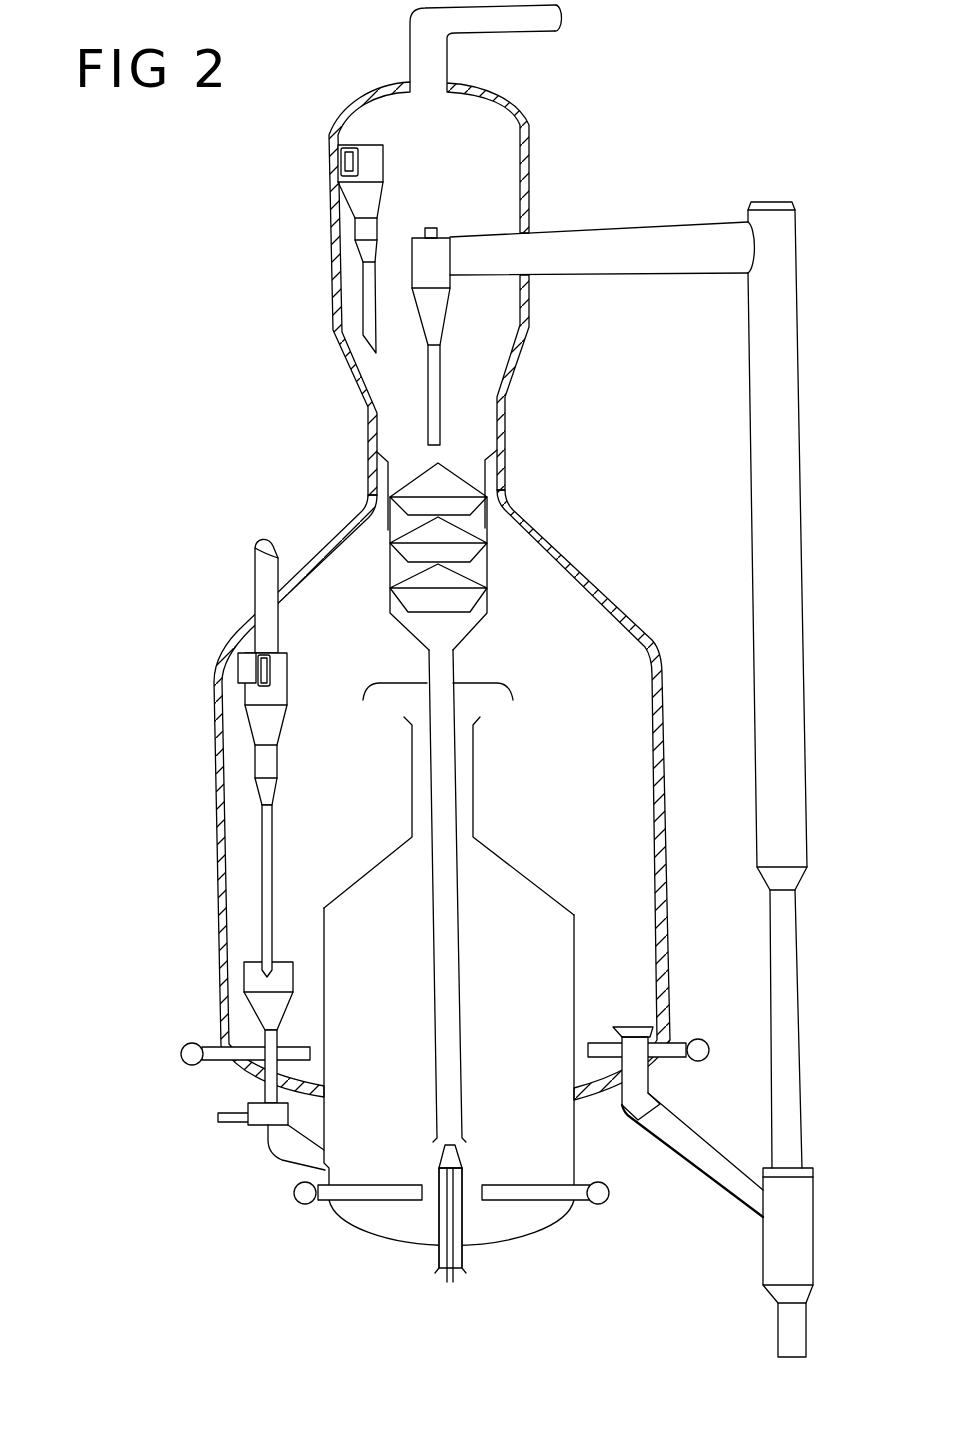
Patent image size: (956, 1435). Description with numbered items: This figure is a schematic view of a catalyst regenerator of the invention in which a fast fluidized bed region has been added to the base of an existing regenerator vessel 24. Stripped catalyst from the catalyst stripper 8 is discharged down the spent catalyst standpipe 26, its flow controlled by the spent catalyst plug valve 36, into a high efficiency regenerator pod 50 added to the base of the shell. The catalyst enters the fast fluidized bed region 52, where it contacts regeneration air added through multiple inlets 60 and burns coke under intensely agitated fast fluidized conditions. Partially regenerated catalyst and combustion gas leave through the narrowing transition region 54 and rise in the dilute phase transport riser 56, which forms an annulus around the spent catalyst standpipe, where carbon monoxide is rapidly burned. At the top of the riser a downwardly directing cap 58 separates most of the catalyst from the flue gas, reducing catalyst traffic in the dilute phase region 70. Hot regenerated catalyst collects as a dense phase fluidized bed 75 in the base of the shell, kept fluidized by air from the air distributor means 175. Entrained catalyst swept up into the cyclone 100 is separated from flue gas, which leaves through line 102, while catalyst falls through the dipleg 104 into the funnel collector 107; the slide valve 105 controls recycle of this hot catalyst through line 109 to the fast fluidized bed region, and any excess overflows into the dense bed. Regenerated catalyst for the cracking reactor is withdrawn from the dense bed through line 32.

The catalyst stripper 8 is at (490, 528).
The regenerator vessel 24 is at (216, 830).
The spent catalyst standpipe 26 is at (472, 630).
The line 32 is at (707, 1174).
The spent catalyst plug valve 36 is at (463, 1170).
The high efficiency regenerator pod 50 is at (397, 1247).
The fast fluidized bed region 52 is at (510, 1005).
The transition region 54 is at (510, 866).
The dilute phase transport riser 56 is at (465, 808).
The cap 58 is at (392, 680).
The inlets 60 is at (345, 1200).
The dilute phase region 70 is at (346, 611).
The dense phase fluidized bed 75 is at (630, 1010).
The cyclone 100 is at (250, 729).
The line 102 is at (255, 590).
The dipleg 104 is at (262, 885).
The slide valve 105 is at (258, 1128).
The funnel collector 107 is at (245, 972).
The line 109 is at (280, 1150).
The air distributor means 175 is at (235, 1078).